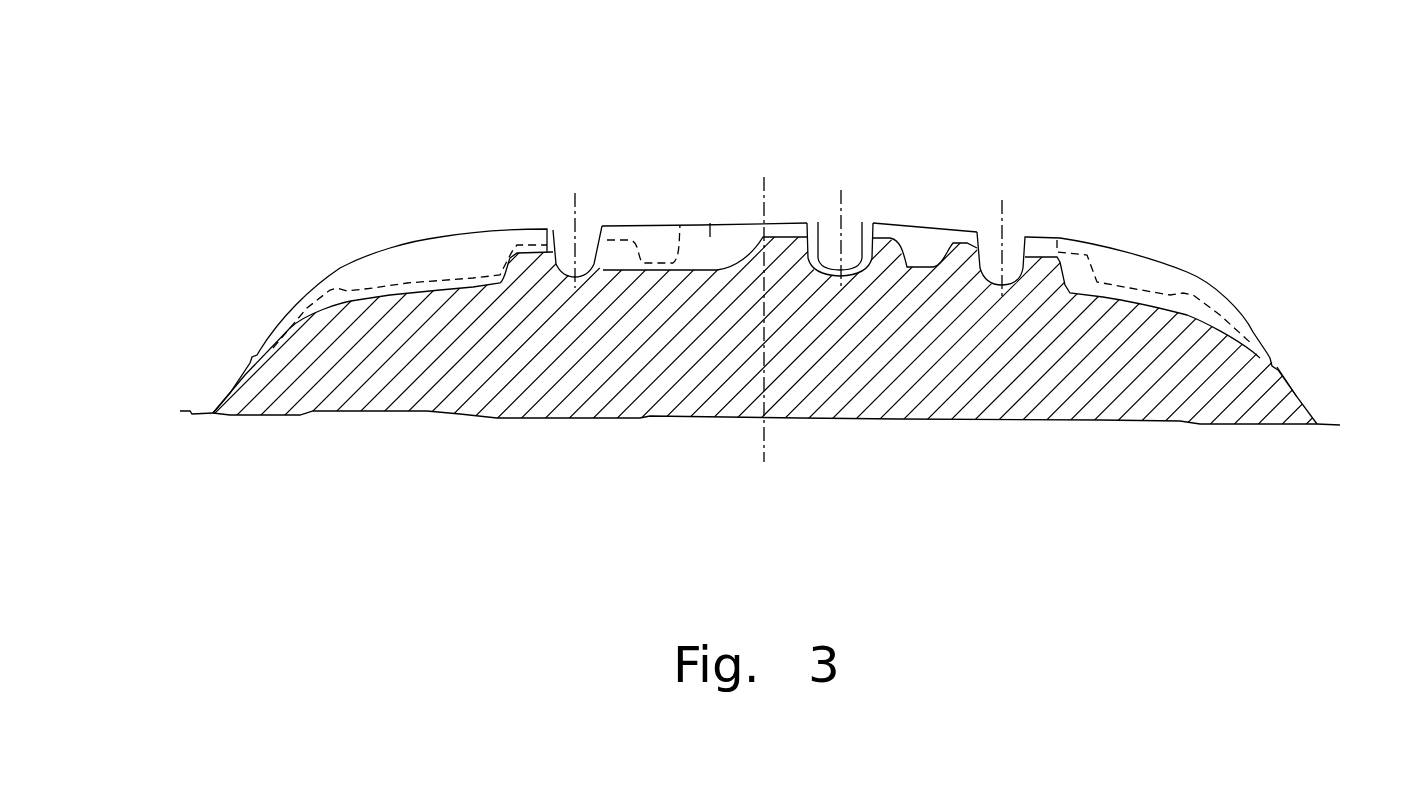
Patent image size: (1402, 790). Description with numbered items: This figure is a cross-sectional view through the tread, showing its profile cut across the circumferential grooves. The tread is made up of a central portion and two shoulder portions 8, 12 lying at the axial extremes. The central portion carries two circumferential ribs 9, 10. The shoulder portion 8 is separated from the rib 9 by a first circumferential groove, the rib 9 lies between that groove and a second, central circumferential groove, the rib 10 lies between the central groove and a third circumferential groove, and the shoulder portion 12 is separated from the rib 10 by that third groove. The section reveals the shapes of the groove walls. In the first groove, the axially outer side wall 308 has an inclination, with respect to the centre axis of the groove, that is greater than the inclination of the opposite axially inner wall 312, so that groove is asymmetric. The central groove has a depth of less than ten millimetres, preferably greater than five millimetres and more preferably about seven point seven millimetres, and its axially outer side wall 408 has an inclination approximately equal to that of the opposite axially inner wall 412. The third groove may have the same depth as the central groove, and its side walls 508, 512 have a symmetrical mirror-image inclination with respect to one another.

The shoulder portion 8 is at (426, 237).
The circumferential rib 9 is at (728, 212).
The circumferential rib 10 is at (928, 214).
The shoulder portion 12 is at (1150, 245).
The axially outer side wall 308 is at (553, 233).
The axially inner wall 312 is at (595, 238).
The axially outer side wall 408 is at (818, 236).
The axially inner wall 412 is at (860, 236).
The side wall 508 is at (979, 237).
The side wall 512 is at (1026, 240).